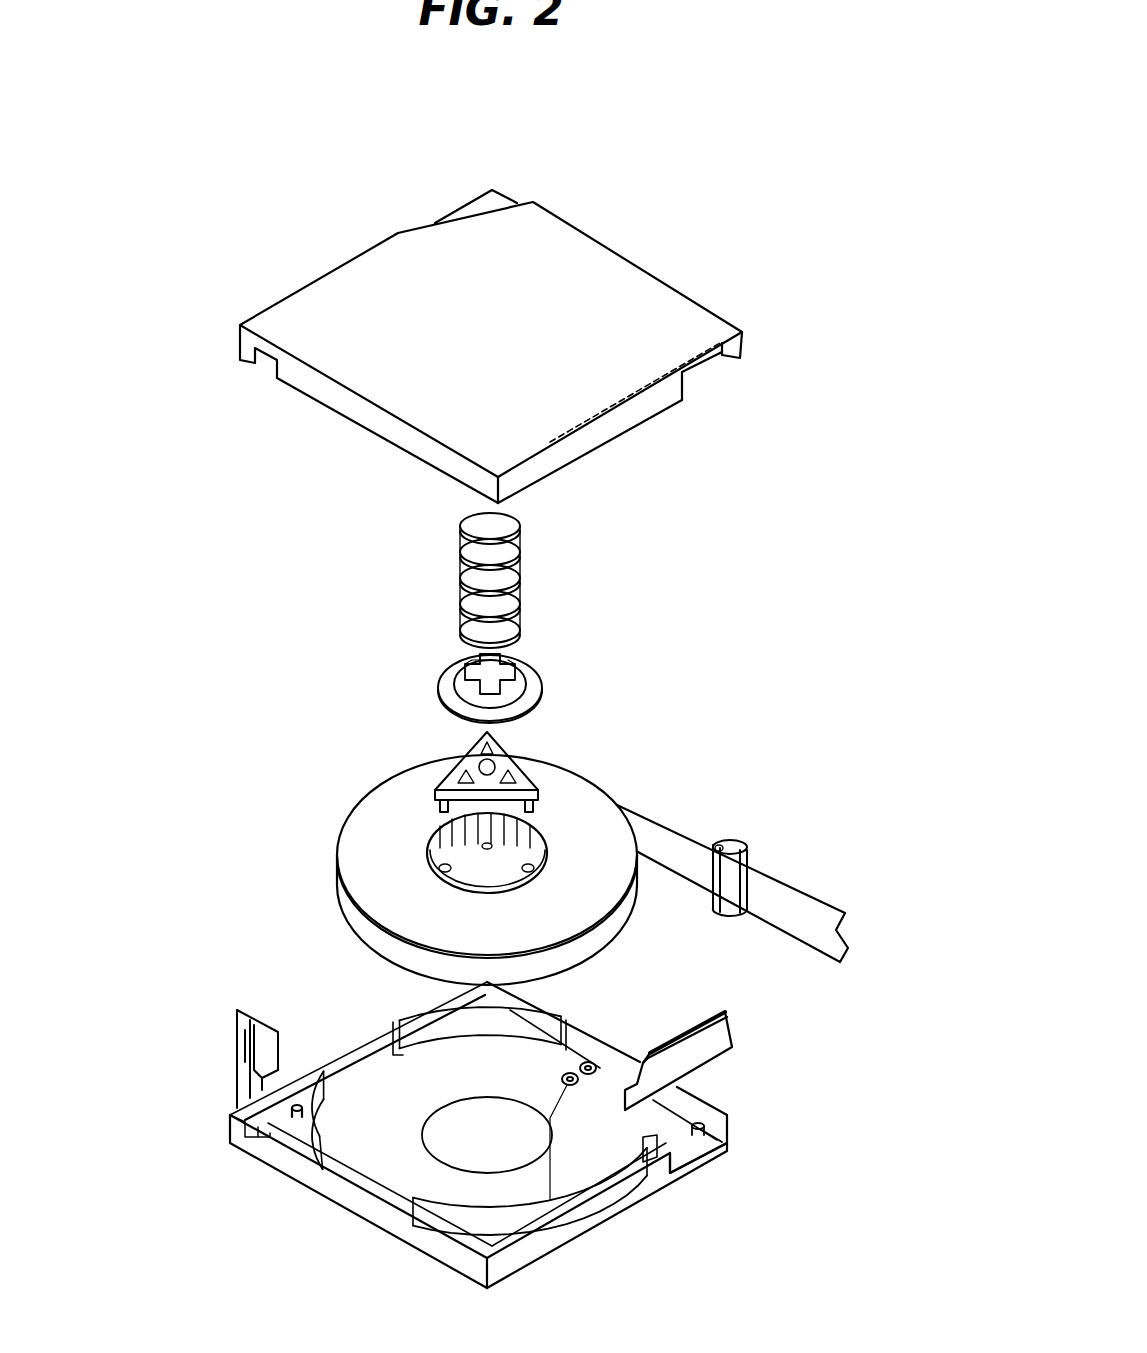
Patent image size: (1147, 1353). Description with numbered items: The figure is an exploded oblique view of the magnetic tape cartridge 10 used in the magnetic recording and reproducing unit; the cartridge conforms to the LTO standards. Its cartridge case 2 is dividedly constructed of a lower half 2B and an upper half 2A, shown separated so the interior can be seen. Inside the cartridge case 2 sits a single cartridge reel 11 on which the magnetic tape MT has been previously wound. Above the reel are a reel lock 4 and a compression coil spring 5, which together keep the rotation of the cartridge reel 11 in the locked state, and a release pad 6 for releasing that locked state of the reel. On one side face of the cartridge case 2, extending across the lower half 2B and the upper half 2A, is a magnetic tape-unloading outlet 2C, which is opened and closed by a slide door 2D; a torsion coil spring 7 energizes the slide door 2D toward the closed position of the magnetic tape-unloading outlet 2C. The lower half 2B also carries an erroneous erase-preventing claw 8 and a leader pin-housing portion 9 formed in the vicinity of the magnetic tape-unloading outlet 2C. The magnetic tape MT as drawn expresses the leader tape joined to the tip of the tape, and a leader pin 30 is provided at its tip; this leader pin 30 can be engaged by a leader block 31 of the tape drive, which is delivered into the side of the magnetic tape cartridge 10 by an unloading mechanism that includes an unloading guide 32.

The cartridge case 2 is at (215, 630).
The upper half 2A is at (337, 420).
The lower half 2B is at (353, 1045).
The magnetic tape-unloading outlet 2C is at (685, 378).
The slide door 2D is at (710, 1018).
The reel lock 4 is at (525, 652).
The compression coil spring 5 is at (525, 580).
The release pad 6 is at (515, 740).
The torsion coil spring 7 is at (595, 1052).
The erroneous erase-preventing claw 8 is at (275, 1035).
The leader pin-housing portion 9 is at (725, 1146).
The magnetic tape cartridge 10 is at (602, 223).
The cartridge reel 11 is at (570, 785).
The magnetic tape MT is at (642, 808).
The leader pin 30 is at (713, 842).
The leader block 31 is at (733, 902).
The unloading guide 32 is at (810, 913).